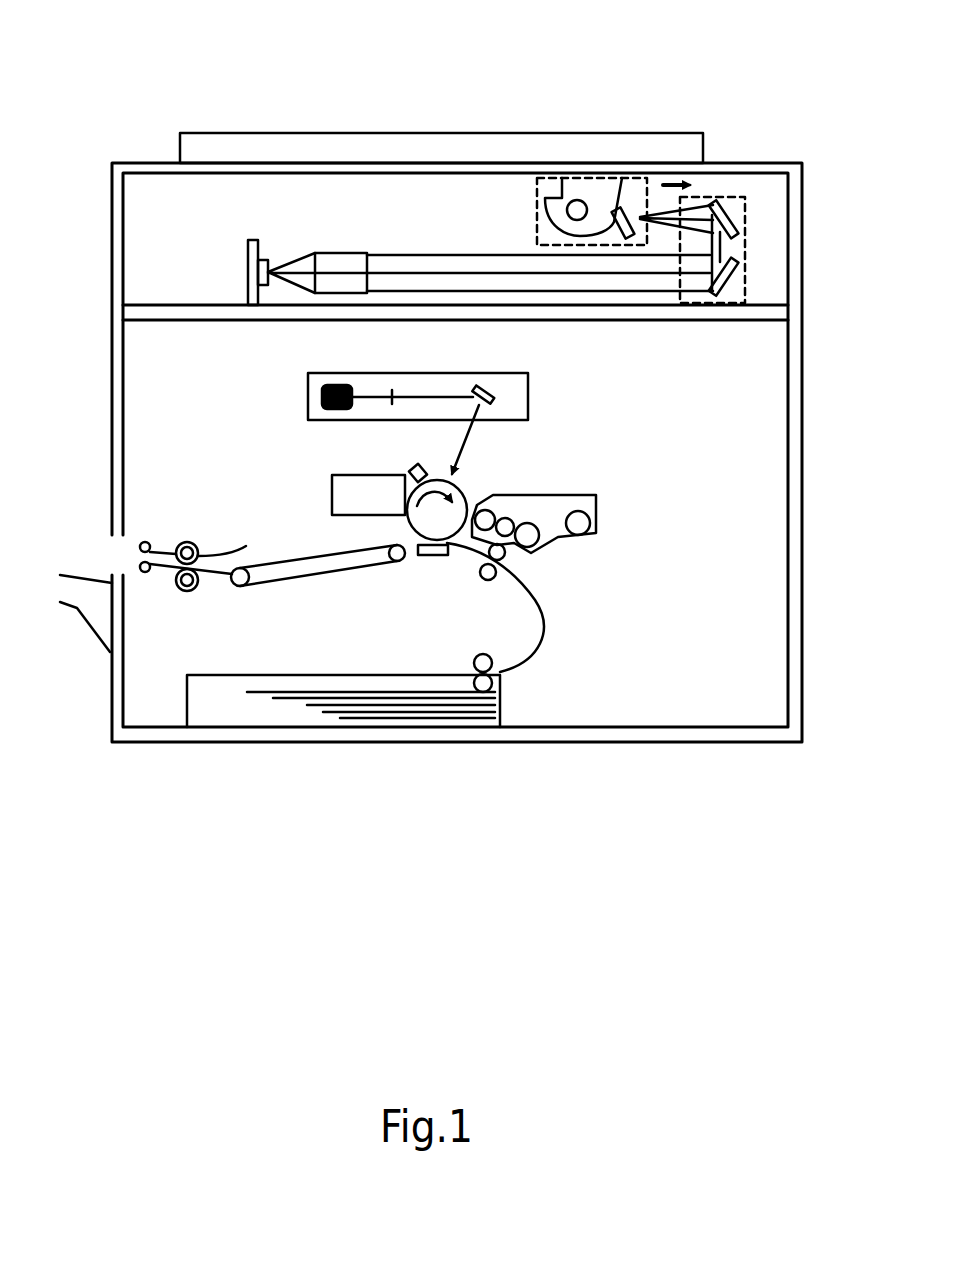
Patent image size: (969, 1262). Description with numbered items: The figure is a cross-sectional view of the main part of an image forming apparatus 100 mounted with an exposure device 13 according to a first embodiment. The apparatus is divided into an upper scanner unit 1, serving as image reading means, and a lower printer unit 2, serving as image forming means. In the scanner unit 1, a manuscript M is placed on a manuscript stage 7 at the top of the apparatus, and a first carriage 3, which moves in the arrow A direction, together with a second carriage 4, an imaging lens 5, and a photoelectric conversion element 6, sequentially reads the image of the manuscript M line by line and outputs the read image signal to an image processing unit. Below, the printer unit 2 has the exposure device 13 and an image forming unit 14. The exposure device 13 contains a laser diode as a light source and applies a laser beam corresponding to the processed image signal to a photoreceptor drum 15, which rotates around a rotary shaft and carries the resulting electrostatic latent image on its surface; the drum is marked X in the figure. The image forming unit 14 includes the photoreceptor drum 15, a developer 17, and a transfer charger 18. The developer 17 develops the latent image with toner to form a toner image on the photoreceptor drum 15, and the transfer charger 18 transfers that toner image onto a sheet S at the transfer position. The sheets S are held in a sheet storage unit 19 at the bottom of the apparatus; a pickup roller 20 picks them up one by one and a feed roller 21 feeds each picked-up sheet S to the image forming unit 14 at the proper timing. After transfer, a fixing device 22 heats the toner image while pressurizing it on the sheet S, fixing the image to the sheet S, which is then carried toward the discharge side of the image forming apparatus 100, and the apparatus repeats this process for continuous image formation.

The image forming apparatus 100 is at (778, 133).
The scanner unit 1 is at (152, 246).
The printer unit 2 is at (765, 539).
The first carriage 3 is at (548, 178).
The second carriage 4 is at (731, 197).
The imaging lens 5 is at (345, 253).
The photoelectric conversion element 6 is at (248, 252).
The manuscript stage 7 is at (258, 165).
The manuscript M is at (427, 162).
The arrow A direction A is at (673, 185).
The exposure device 13 is at (528, 397).
The photosensitive drum X is at (466, 485).
The image forming unit 14 is at (566, 576).
The photoreceptor drum 15 is at (405, 524).
The developer 17 is at (597, 520).
The transfer charger 18 is at (430, 556).
The sheet storage unit 19 is at (222, 713).
The pickup roller 20 is at (494, 692).
The feed roller 21 is at (490, 581).
The fixing device 22 is at (188, 542).
The sheet S is at (384, 716).